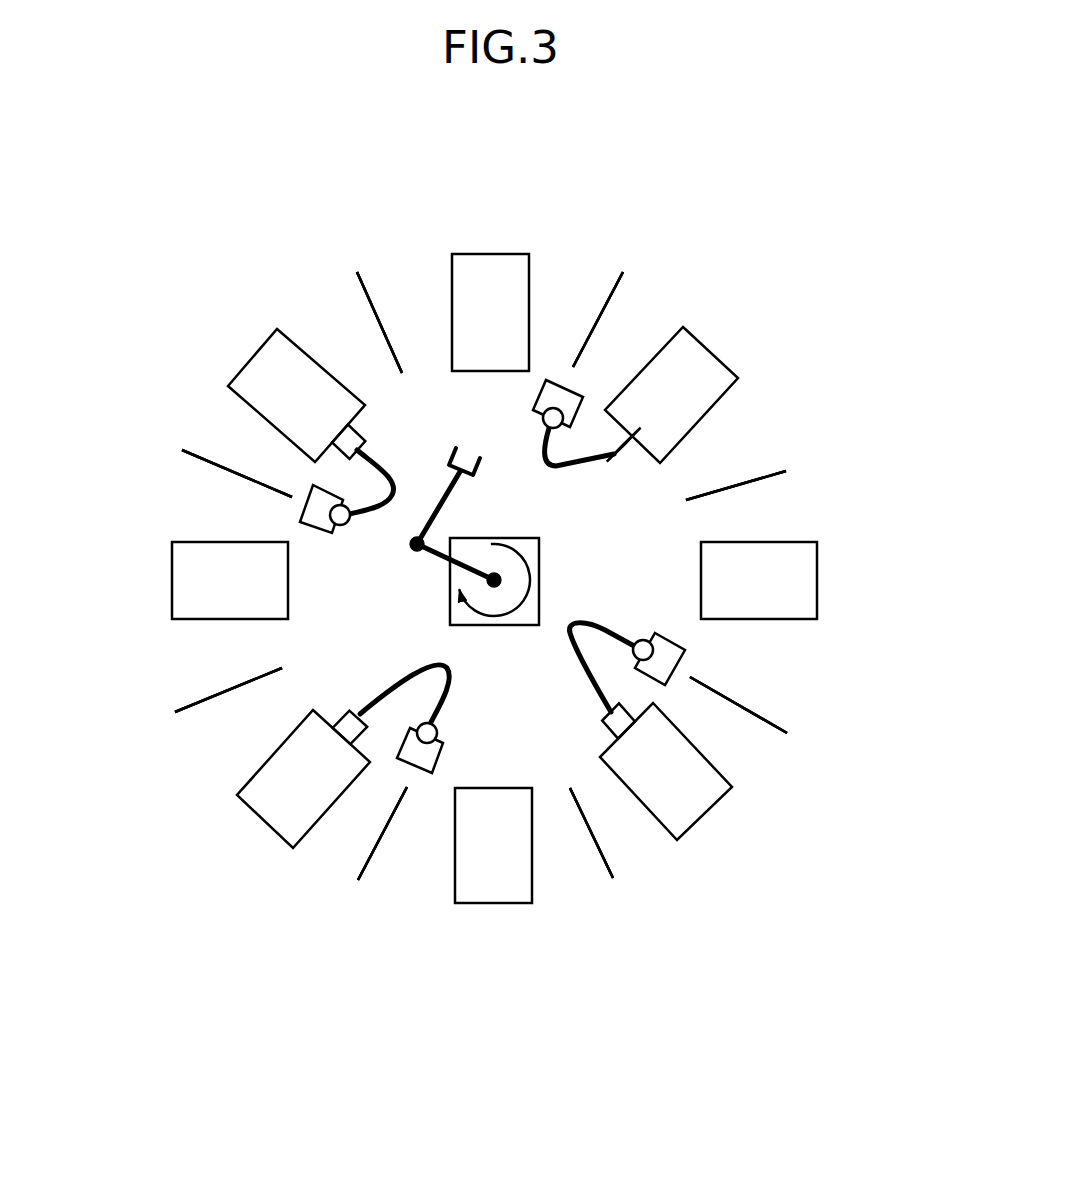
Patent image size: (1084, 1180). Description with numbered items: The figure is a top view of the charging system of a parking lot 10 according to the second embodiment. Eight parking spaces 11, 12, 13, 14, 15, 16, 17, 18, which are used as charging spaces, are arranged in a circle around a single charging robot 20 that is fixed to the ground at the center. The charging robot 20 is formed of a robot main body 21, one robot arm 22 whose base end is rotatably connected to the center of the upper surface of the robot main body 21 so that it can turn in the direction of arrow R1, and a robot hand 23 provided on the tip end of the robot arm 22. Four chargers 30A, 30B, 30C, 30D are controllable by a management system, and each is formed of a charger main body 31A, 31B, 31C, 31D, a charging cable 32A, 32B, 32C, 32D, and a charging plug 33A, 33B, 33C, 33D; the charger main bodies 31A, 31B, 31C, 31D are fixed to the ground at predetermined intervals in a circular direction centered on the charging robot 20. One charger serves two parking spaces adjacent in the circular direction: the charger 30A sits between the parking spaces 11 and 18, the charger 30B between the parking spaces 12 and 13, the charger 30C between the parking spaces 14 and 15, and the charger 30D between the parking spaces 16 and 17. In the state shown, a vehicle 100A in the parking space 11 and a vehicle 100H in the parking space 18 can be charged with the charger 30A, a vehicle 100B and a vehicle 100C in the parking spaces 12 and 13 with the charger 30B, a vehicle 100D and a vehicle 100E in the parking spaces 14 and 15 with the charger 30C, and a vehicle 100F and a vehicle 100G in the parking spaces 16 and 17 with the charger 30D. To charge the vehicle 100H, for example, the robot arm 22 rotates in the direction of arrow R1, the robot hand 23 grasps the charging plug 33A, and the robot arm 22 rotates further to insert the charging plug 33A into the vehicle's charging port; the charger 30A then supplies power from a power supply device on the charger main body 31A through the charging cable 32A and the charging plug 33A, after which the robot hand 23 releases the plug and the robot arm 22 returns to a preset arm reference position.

The parking lot 10 is at (257, 216).
The parking space 11 is at (413, 272).
The parking space 12 is at (211, 420).
The parking space 13 is at (188, 655).
The parking space 14 is at (332, 845).
The parking space 15 is at (563, 884).
The parking space 16 is at (740, 753).
The parking space 17 is at (772, 498).
The parking space 18 is at (653, 302).
The charging robot 20 is at (487, 589).
The robot main body 21 is at (540, 577).
The robot arm 22 is at (417, 547).
The robot hand 23 is at (479, 462).
The arrow direction R1 is at (525, 605).
The charger 30A is at (568, 377).
The charger 30B is at (267, 521).
The charger 30C is at (423, 760).
The charger 30D is at (698, 652).
The charger main body 31A is at (542, 403).
The charger main body 31B is at (320, 533).
The charger main body 31C is at (444, 754).
The charger main body 31D is at (665, 633).
The charging cable 32A is at (588, 460).
The charging cable 32B is at (365, 516).
The charging cable 32C is at (422, 666).
The charging cable 32D is at (573, 640).
The charging plug 33A is at (635, 452).
The charging plug 33B is at (360, 425).
The charging plug 33C is at (338, 710).
The charging plug 33D is at (603, 728).
The vehicle 100A is at (487, 253).
The vehicle 100B is at (253, 353).
The vehicle 100C is at (172, 578).
The vehicle 100D is at (262, 820).
The vehicle 100E is at (488, 903).
The vehicle 100F is at (705, 815).
The vehicle 100G is at (817, 580).
The vehicle 100H is at (708, 348).